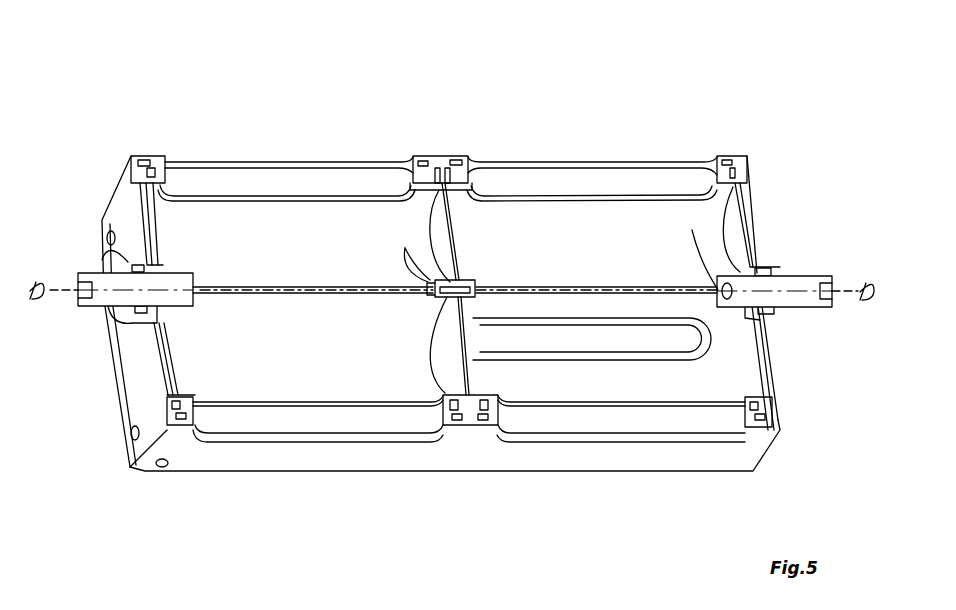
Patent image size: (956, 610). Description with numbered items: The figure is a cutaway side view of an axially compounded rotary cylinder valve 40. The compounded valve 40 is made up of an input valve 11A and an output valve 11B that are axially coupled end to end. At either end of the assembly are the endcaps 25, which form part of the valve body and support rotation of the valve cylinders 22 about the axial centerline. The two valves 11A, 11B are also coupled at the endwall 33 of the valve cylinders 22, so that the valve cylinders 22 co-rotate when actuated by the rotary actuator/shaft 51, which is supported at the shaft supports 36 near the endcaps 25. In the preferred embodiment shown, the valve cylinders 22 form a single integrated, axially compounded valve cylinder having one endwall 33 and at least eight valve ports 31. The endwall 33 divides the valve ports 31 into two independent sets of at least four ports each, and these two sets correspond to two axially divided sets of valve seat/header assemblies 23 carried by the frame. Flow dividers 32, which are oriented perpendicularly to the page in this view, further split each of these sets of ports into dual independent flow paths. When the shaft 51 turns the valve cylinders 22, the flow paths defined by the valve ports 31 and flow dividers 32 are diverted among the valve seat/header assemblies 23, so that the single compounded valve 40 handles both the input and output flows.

The axially compounded rotary cylinder valve 40 is at (122, 84).
The input valve 11A is at (322, 140).
The output valve 11B is at (605, 155).
The endcaps 25 is at (102, 177).
The shaft supports 36 is at (127, 263).
The rotary actuator/shaft 51 is at (108, 302).
The flow dividers 32 is at (305, 287).
The endwall 33 is at (436, 238).
The valve ports 31 is at (592, 339).
The valve cylinders 22 is at (402, 412).
The valve seat/header assemblies 23 is at (308, 488).